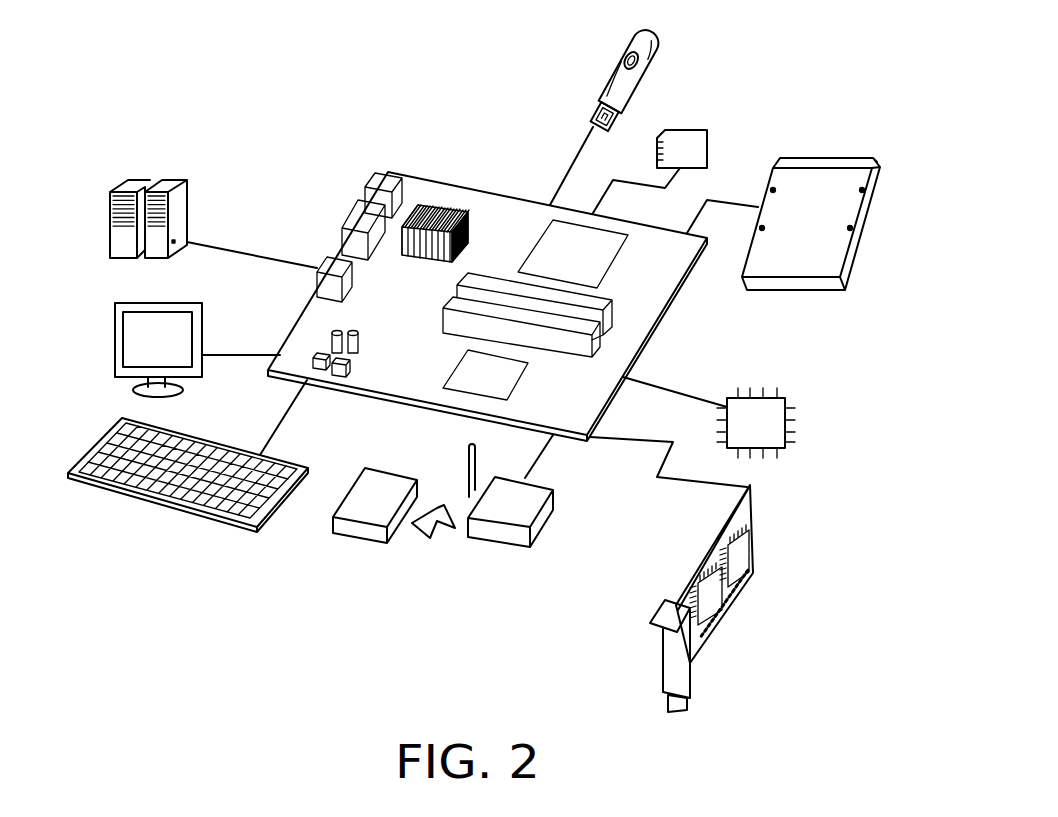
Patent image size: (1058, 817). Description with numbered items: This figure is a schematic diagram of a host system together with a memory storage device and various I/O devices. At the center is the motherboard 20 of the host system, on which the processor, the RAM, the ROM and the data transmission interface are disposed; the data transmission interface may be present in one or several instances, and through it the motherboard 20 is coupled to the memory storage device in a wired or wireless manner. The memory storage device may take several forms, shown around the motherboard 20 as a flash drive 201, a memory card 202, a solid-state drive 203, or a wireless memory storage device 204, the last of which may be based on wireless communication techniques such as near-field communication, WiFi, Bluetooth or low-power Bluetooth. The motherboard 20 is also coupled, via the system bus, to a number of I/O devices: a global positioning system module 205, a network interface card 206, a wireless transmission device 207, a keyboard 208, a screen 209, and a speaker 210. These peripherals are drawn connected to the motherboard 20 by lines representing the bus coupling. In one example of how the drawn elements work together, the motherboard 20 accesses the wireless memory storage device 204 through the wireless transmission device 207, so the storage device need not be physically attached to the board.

The motherboard 20 is at (490, 217).
The flash drive 201 is at (620, 64).
The memory card 202 is at (707, 138).
The solid-state drive 203 is at (827, 157).
The wireless memory storage device 204 is at (348, 483).
The global positioning system (GPS) module 205 is at (796, 418).
The network interface card 206 is at (753, 543).
The wireless transmission device 207 is at (542, 528).
The keyboard 208 is at (192, 512).
The screen 209 is at (115, 358).
The speaker 210 is at (108, 242).